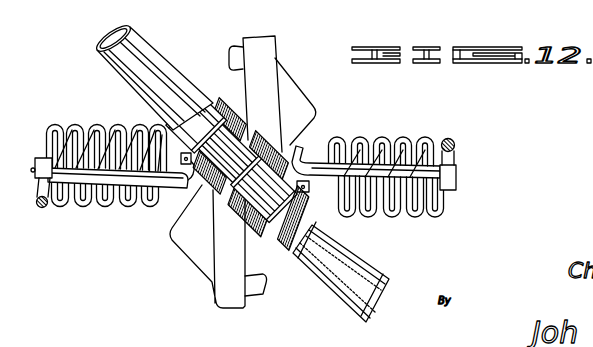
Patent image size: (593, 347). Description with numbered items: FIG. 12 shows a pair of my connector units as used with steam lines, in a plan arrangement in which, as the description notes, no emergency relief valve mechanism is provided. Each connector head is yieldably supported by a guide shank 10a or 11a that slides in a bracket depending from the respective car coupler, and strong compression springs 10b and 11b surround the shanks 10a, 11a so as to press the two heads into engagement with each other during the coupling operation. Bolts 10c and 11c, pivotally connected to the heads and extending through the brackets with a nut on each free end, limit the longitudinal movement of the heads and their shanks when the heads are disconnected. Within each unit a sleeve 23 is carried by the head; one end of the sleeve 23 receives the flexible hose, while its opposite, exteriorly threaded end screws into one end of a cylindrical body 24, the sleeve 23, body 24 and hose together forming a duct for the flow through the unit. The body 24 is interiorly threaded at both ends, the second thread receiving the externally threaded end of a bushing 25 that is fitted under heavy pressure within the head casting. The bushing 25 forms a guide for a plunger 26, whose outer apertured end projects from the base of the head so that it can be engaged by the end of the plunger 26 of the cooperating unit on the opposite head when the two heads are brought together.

The guide shank 10a is at (41, 160).
The compression spring 10b is at (58, 216).
The bolt 10c is at (97, 207).
The guide shank 11a is at (447, 182).
The compression spring 11b is at (413, 216).
The bolt 11c is at (410, 163).
The sleeve 23 is at (127, 82).
The cylindrical body 24 is at (204, 96).
The bushing 25 is at (200, 193).
The plunger 26 is at (238, 138).